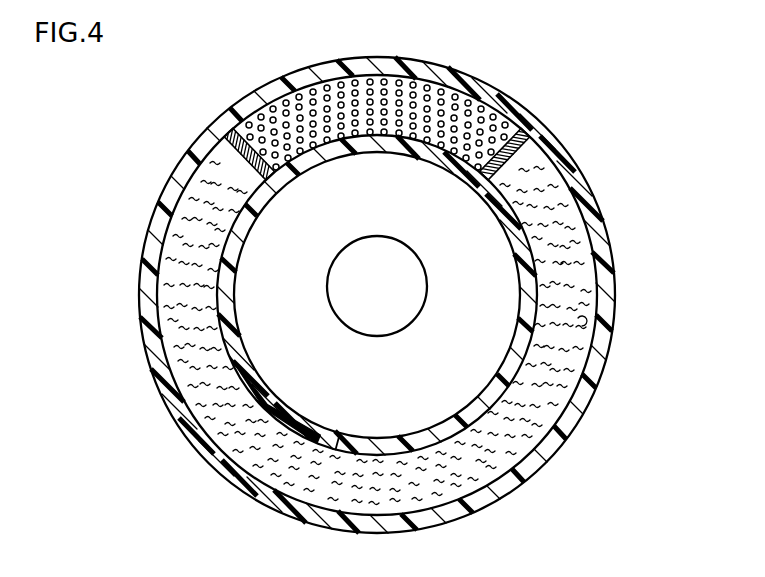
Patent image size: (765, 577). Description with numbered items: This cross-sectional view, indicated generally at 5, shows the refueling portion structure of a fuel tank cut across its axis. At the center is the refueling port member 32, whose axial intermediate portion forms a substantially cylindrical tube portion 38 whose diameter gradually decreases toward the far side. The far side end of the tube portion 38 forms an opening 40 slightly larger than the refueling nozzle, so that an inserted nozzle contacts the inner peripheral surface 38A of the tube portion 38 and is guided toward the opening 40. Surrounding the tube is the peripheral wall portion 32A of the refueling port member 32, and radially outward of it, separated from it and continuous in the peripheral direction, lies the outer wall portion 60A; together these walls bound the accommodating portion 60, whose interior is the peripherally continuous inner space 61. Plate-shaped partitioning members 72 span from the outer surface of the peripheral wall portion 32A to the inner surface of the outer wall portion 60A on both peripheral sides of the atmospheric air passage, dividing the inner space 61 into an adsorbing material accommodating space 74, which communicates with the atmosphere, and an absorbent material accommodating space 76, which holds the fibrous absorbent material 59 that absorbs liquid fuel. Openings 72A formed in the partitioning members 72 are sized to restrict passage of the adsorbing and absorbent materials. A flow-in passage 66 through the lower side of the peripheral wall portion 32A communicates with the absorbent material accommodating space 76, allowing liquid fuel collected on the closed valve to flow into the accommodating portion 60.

The fixing device 5 is at (209, 110).
The refueling port member 32 is at (377, 295).
The peripheral wall portion 32A is at (513, 266).
The tube portion 38 is at (466, 295).
The inner peripheral surface 38A is at (478, 343).
The opening 40 is at (380, 338).
The absorbent material 59 is at (578, 323).
The accommodating portion 60 is at (427, 295).
The outer wall portion 60A is at (597, 199).
The inner space 61 is at (439, 280).
The flow-in passage 66 is at (345, 437).
The partitioning members 72 is at (387, 147).
The openings 72A is at (528, 158).
The adsorbing material accommodating space 74 is at (600, 79).
The absorbent material accommodating space 76 is at (706, 290).